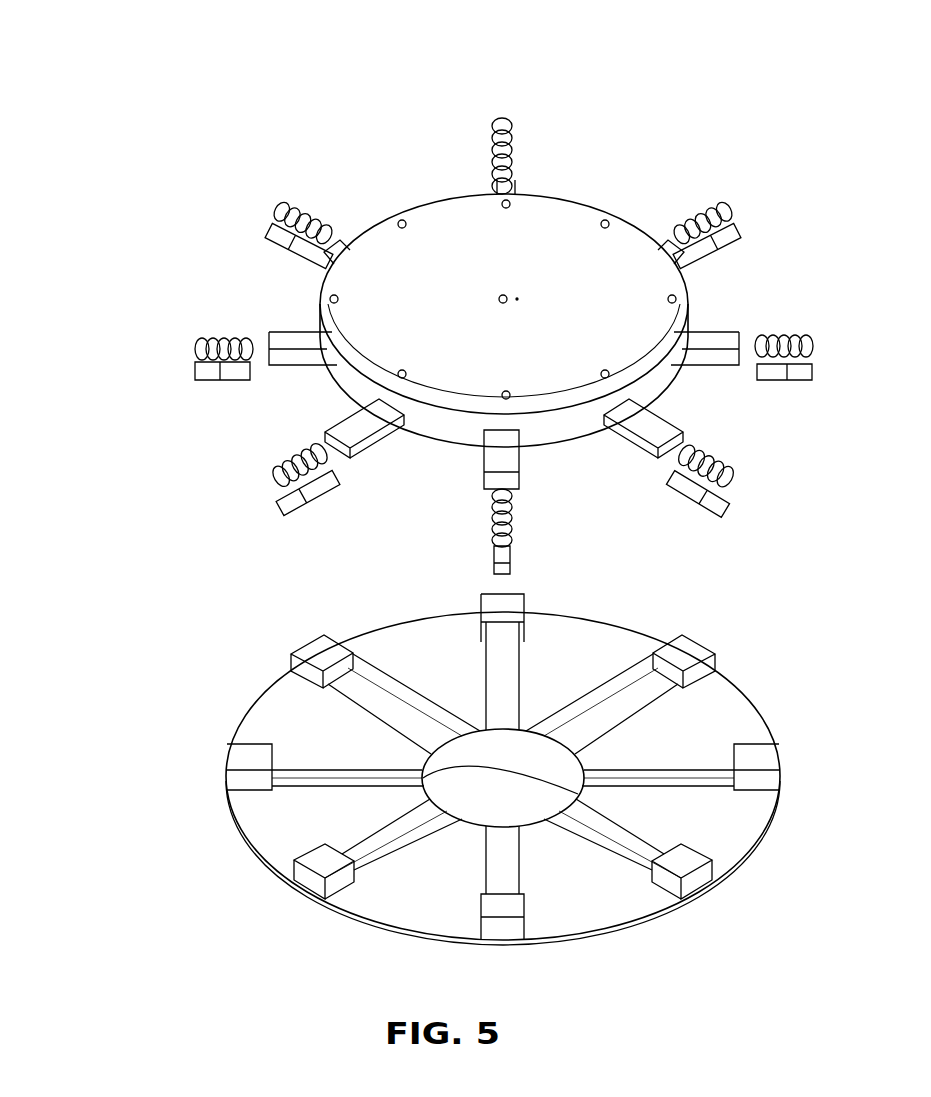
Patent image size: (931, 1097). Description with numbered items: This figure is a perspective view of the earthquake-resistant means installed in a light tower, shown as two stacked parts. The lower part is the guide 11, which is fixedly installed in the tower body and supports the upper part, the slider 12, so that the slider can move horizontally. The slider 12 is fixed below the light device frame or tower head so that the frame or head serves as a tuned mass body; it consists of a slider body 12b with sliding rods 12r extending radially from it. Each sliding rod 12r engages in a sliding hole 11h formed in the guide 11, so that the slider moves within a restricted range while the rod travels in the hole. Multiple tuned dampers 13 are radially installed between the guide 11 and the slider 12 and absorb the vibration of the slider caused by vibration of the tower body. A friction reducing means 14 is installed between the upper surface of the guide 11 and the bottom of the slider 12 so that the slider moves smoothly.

The guide 11 is at (238, 687).
The sliding hole 11h is at (364, 682).
The slider 12 is at (397, 163).
The slider body 12b is at (308, 290).
The sliding rod 12r is at (290, 366).
The tuned damper 13 is at (198, 380).
The friction reducing means 14 is at (373, 827).